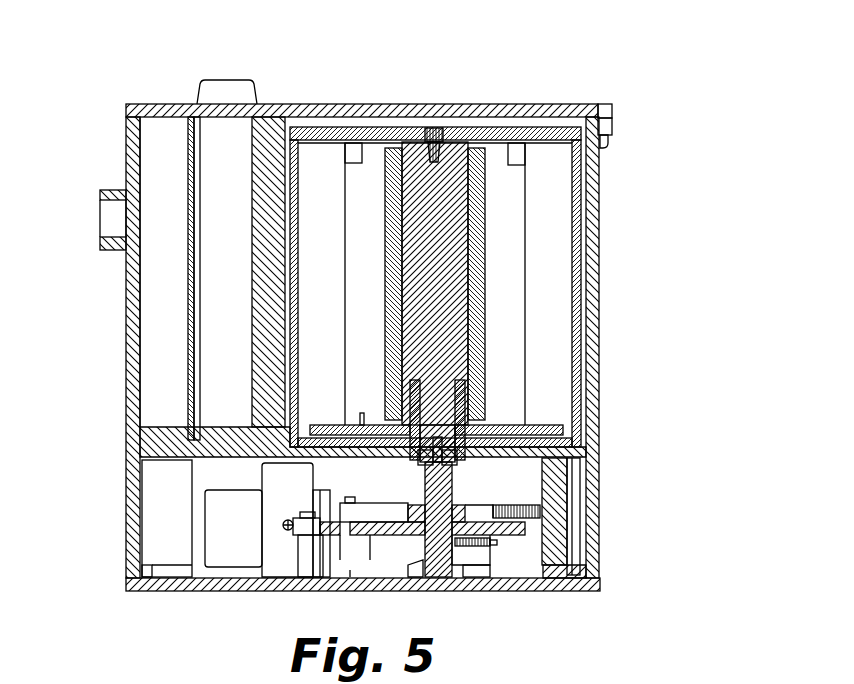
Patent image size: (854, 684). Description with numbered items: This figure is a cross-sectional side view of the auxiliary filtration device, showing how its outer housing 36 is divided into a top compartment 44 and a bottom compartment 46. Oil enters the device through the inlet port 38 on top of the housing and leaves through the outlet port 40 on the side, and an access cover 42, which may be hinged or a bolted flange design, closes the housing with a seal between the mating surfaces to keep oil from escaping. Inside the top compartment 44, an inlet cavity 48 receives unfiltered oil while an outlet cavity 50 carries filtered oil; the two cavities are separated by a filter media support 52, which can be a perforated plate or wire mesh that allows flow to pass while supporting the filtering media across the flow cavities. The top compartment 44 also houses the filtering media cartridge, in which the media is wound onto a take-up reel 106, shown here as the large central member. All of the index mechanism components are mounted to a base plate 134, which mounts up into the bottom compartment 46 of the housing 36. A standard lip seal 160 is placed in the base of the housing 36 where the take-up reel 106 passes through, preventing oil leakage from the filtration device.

The outer housing 36 is at (600, 242).
The inlet port 38 is at (225, 80).
The outlet port 40 is at (100, 206).
The access cover 42 is at (457, 104).
The top compartment 44 is at (86, 116).
The bottom compartment 46 is at (86, 460).
The inlet cavity 48 is at (238, 136).
The outlet cavity 50 is at (158, 127).
The filter media support 52 is at (190, 296).
The take-up reel 106 is at (487, 292).
The base plate 134 is at (557, 592).
The lip seal 160 is at (455, 462).